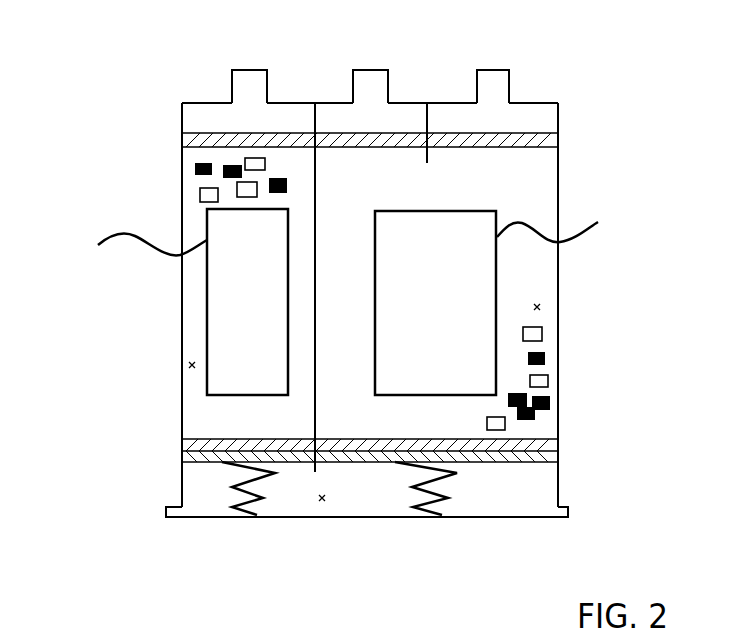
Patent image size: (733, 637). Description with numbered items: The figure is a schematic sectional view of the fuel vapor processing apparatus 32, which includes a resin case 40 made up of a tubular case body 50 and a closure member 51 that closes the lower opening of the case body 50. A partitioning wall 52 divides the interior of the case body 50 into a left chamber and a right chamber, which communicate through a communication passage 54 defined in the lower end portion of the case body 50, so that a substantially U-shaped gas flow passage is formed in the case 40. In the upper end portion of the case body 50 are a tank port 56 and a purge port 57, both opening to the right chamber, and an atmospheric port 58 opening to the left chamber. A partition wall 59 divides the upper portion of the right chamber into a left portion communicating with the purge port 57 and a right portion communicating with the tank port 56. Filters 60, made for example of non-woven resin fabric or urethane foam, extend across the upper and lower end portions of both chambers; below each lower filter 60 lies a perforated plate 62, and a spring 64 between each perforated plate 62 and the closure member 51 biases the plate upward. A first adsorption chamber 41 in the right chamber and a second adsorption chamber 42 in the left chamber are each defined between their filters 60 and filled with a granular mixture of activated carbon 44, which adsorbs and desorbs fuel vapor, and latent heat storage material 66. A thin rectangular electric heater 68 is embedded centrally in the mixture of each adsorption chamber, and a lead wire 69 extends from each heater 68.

The fuel vapor processing apparatus 32 is at (580, 96).
The case 40 is at (533, 96).
The first adsorption chamber 41 is at (540, 307).
The second adsorption chamber 42 is at (190, 365).
The activated carbon 44 is at (195, 168).
The case body 50 is at (560, 180).
The closure member 51 is at (518, 517).
The partitioning wall 52 is at (318, 393).
The communication passage 54 is at (322, 498).
The tank port 56 is at (493, 70).
The purge port 57 is at (372, 70).
The atmospheric port 58 is at (250, 70).
The partition wall 59 is at (425, 152).
The filter 60 is at (398, 140).
The perforated plate 62 is at (198, 458).
The spring 64 is at (232, 487).
The latent heat storage material 66 is at (200, 195).
The electric heater 68 is at (205, 334).
The lead wire 69 is at (113, 233).